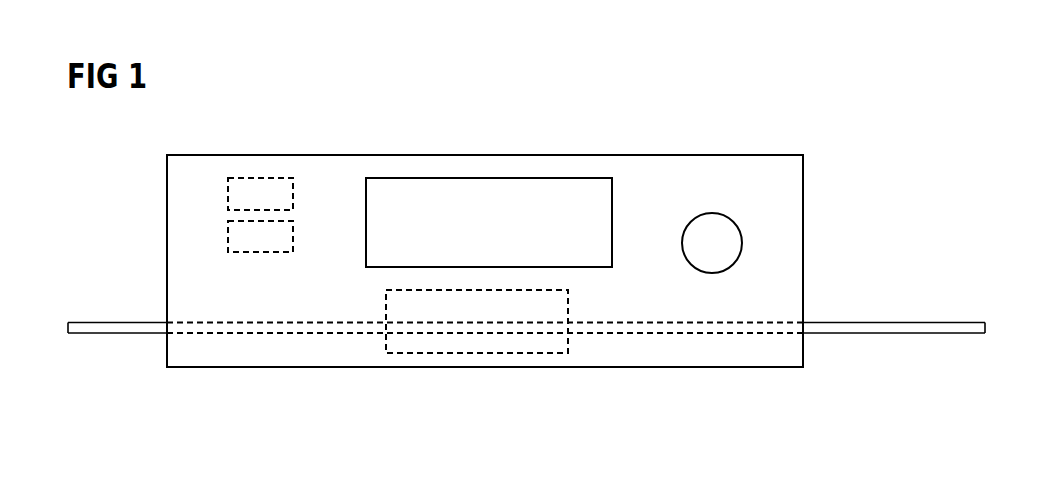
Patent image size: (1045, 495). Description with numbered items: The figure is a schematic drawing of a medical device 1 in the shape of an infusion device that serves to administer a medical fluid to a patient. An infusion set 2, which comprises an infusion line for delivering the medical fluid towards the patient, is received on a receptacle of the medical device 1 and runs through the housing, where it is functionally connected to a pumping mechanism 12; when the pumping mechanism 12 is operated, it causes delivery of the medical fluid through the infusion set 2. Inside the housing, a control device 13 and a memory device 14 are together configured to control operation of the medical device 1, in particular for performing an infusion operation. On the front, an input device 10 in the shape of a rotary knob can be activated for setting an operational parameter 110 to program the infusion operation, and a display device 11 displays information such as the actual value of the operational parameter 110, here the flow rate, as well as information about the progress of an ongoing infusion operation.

The medical device 1 is at (716, 116).
The infusion set 2 is at (747, 333).
The input device 10 is at (728, 243).
The display device 11 is at (448, 178).
The operational parameter 110 is at (375, 214).
The pumping mechanism 12 is at (502, 357).
The control device 13 is at (228, 240).
The memory device 14 is at (228, 196).